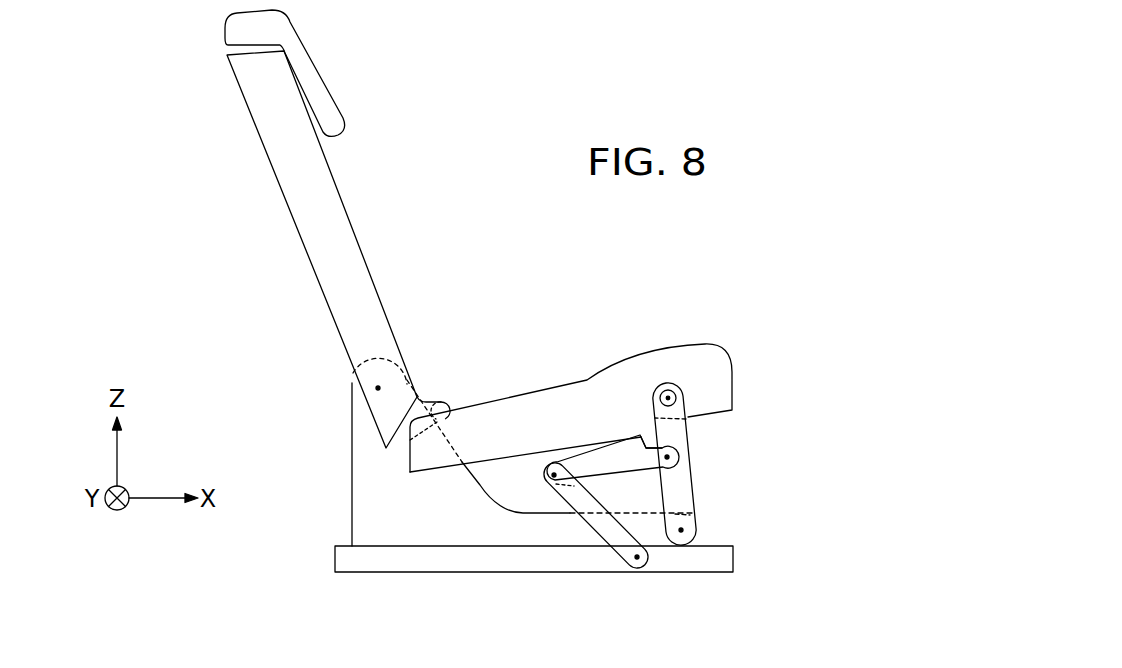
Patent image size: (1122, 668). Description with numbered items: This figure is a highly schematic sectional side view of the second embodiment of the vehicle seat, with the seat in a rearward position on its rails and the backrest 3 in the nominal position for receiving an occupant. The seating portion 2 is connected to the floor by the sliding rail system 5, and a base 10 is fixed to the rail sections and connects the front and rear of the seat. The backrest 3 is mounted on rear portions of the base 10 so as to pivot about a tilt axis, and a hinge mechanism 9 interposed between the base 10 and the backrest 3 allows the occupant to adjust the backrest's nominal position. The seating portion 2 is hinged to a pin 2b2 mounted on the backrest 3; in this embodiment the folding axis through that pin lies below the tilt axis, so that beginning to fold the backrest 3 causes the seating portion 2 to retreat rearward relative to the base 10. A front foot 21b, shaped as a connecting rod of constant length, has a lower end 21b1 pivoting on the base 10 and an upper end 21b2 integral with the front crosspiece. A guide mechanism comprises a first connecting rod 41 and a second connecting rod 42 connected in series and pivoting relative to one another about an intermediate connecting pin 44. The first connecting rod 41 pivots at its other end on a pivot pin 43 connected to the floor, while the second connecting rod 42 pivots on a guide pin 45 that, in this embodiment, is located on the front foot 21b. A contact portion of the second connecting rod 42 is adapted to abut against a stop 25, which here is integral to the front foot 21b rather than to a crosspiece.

The seating portion 2 is at (551, 376).
The pin 2b2 is at (438, 400).
The backrest 3 is at (276, 223).
The sliding rail system 5 is at (325, 563).
The hinge mechanism 9 is at (368, 388).
The base 10 is at (381, 501).
The front foot 21b is at (678, 483).
The end of front foot 21b1 is at (683, 530).
The upper end of front foot 21b2 is at (668, 397).
The stop 25 is at (663, 432).
The first connecting rod 41 is at (584, 503).
The second connecting rod 42 is at (613, 460).
The pivot pin 43 is at (639, 559).
The connecting pin 44 is at (550, 478).
The guide pin 45 is at (669, 456).